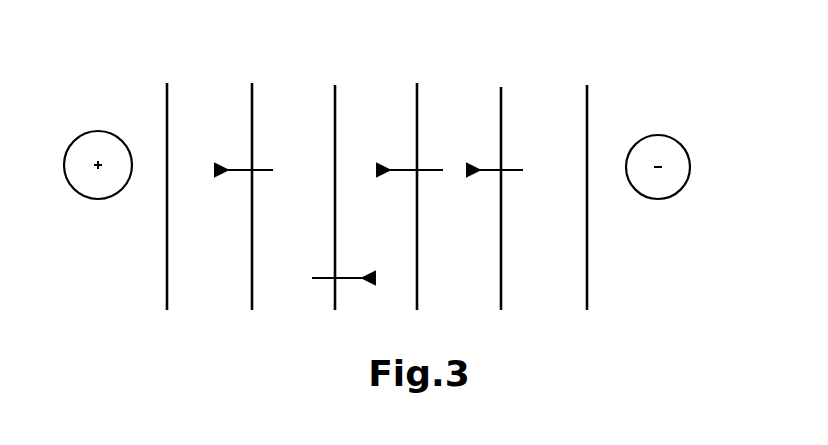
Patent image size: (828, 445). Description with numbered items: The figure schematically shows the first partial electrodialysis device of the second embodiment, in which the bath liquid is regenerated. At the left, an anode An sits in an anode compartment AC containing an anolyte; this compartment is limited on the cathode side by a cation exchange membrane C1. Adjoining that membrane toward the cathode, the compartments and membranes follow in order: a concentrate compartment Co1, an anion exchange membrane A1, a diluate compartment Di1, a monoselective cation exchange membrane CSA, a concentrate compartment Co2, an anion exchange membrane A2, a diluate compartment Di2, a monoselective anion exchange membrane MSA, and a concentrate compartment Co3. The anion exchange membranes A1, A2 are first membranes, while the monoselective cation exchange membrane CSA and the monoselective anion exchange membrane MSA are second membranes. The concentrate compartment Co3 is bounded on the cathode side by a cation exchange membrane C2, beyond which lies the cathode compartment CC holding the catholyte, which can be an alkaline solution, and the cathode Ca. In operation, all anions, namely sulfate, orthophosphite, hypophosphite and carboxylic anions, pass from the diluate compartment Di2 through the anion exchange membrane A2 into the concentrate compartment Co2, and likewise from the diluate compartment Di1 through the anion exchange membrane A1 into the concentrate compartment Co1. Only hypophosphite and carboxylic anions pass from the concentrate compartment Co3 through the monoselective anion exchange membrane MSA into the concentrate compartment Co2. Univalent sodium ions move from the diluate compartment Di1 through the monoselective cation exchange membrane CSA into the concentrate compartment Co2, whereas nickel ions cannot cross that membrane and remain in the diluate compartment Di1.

The cation exchange membrane C1 is at (163, 176).
The anion exchange membrane A1 is at (252, 179).
The monoselective cation exchange membrane CSA is at (337, 178).
The anion exchange membrane A2 is at (417, 180).
The monoselective anion exchange membrane MSA is at (499, 180).
The cation exchange membrane C2 is at (584, 177).
The anode compartment AC is at (110, 196).
The anode An is at (98, 185).
The cathode compartment CC is at (650, 196).
The cathode Ca is at (658, 188).
The concentrate compartment Co1 is at (231, 140).
The concentrate compartment Co2 is at (324, 228).
The concentrate compartment Co3 is at (520, 152).
The diluate compartment Di1 is at (295, 182).
The diluate compartment Di2 is at (437, 182).